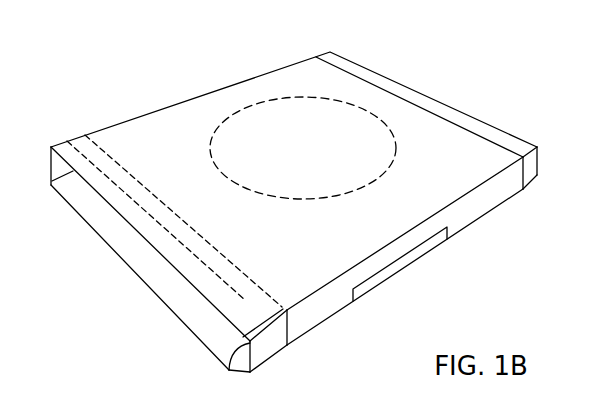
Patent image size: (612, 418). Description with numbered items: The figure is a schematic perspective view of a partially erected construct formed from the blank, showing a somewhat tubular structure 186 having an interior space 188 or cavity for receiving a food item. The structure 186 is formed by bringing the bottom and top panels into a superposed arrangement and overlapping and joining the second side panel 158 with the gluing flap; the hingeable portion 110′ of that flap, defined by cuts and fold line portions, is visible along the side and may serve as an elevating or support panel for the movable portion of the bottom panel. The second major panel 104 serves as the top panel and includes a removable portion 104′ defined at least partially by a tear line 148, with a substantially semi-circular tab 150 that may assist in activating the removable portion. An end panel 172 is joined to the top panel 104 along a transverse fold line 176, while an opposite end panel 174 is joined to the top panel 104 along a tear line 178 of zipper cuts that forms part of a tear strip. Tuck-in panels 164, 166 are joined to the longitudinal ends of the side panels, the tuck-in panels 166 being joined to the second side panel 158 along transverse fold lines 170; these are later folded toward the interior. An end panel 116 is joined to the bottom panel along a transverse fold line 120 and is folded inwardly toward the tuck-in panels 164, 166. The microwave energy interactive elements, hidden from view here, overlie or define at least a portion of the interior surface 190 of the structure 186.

The tubular structure 186 is at (523, 65).
The end panel 172 is at (419, 92).
The transverse fold line 176 is at (481, 137).
The tuck-in panel 166 is at (537, 169).
The transverse fold line 170 is at (528, 183).
The second side panel 158 is at (305, 323).
The hingeable portion 110′ is at (406, 258).
The tab 150 is at (309, 96).
The removable portion 104′ is at (285, 153).
The second major panel 104 is at (283, 263).
The tear line 148 is at (395, 150).
The tear line 178 is at (108, 152).
The end panel 174 is at (232, 325).
The tuck-in panel 164 is at (51, 163).
The end panel 116 is at (68, 208).
The interior surface 190 is at (185, 325).
The interior space 188 is at (133, 252).
The transverse fold line 120 is at (230, 366).